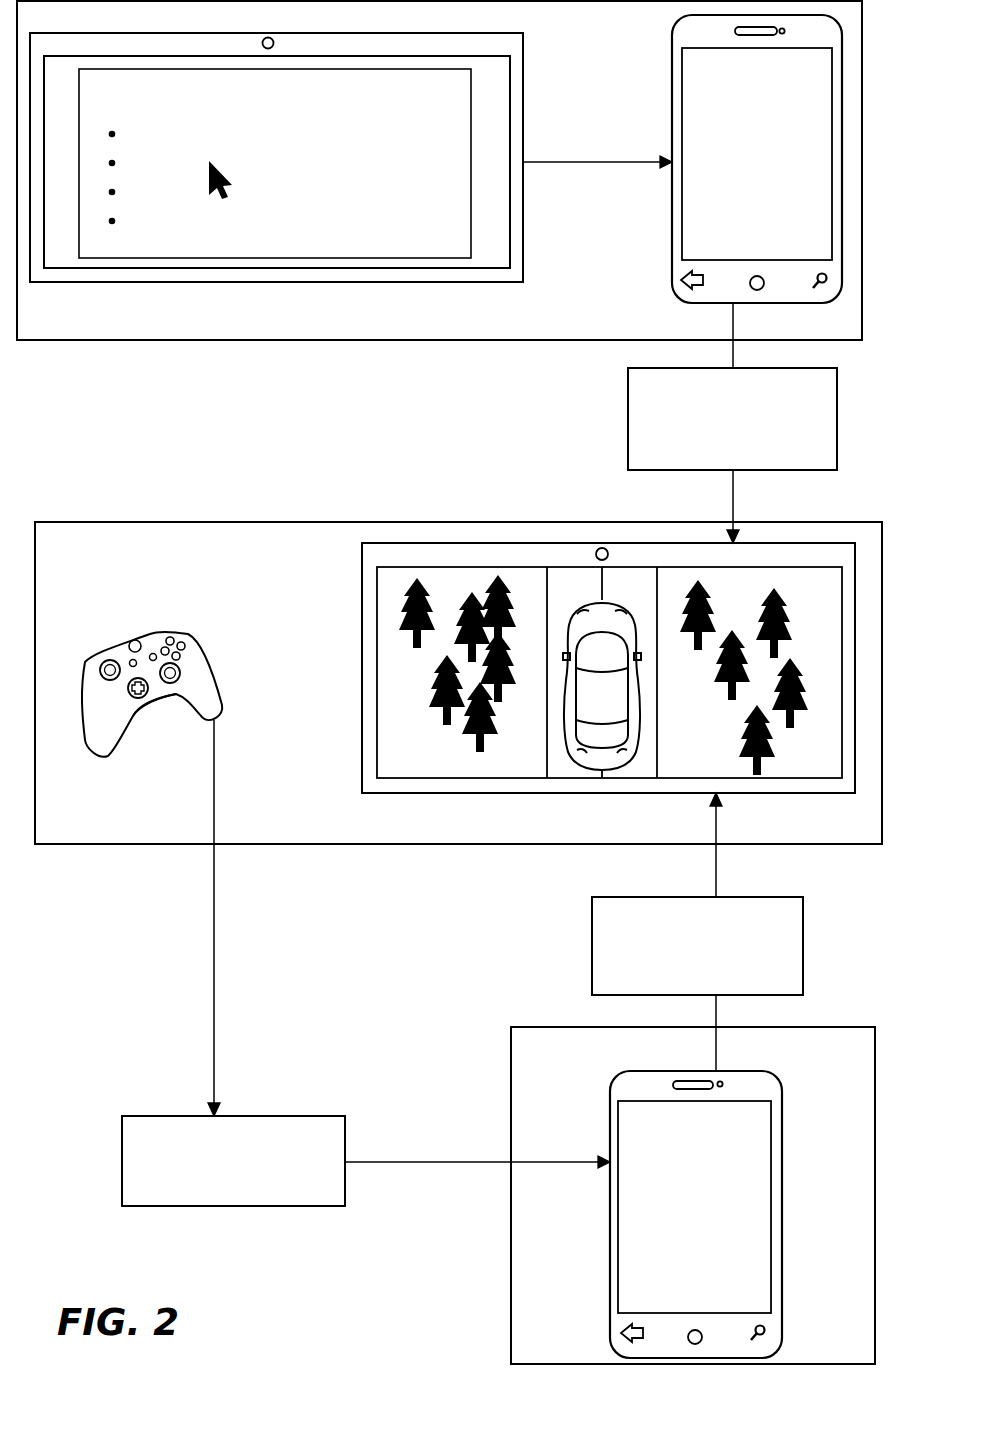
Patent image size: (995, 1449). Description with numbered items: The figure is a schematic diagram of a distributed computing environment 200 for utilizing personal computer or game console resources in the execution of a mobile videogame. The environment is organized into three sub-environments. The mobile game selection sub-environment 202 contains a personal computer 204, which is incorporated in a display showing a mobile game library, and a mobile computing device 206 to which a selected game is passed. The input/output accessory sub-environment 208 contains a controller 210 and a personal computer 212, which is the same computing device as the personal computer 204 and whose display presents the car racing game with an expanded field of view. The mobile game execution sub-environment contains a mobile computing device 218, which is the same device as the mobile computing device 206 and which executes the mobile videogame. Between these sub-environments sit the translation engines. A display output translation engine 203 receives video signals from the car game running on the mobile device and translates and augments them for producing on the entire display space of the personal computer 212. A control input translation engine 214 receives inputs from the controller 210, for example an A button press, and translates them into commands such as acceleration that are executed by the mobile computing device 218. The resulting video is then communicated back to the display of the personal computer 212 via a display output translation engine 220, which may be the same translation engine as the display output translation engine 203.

The distributed computing environment 200 is at (346, 1294).
The mobile game selection sub-environment 202 is at (850, 331).
The display output translation engine 203 is at (824, 460).
The personal computer 204 is at (523, 282).
The mobile computing device 206 is at (672, 78).
The input/output accessory sub-environment 208 is at (860, 834).
The controller 210 is at (157, 632).
The personal computer 212 is at (362, 662).
The control input translation engine 214 is at (336, 1202).
The mobile computing device 218 is at (610, 1120).
The display output translation engine 220 is at (794, 988).